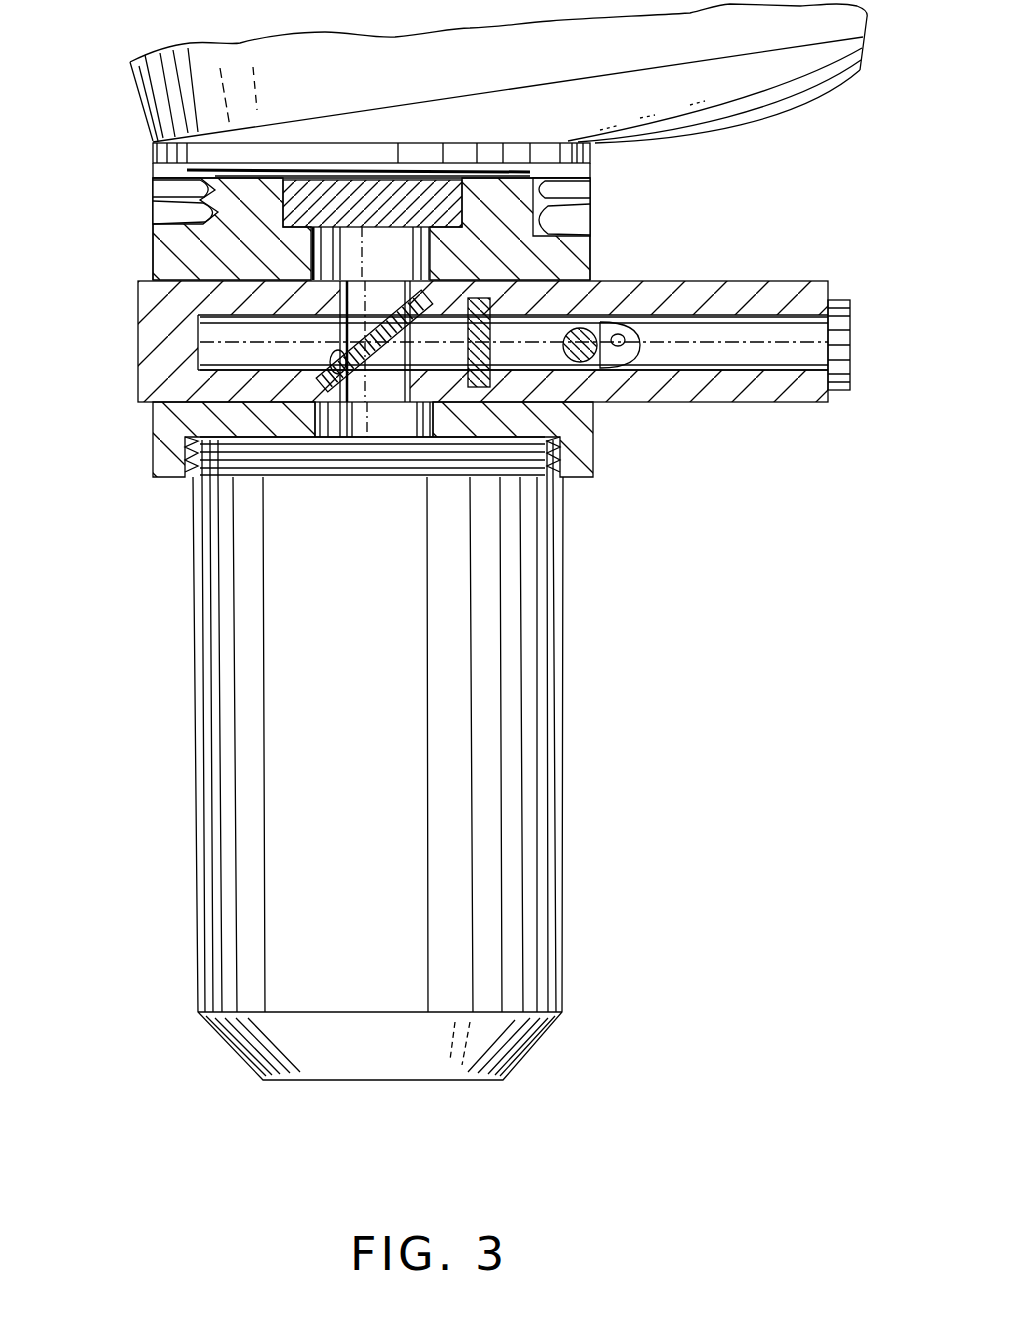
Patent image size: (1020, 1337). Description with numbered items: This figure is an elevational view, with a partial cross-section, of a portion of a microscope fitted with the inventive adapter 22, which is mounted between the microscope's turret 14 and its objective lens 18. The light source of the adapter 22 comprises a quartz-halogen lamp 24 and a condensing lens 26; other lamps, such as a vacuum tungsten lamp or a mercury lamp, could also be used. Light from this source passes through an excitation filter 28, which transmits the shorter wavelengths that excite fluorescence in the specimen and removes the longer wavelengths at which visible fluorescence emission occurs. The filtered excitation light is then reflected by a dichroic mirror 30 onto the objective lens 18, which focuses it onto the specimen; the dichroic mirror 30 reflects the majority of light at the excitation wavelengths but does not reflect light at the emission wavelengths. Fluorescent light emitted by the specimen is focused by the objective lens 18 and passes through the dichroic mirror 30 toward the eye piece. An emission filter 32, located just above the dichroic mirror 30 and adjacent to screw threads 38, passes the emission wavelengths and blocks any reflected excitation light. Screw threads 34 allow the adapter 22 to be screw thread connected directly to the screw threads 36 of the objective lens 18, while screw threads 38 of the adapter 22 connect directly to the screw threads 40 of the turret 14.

The turret 14 is at (843, 70).
The objective lens 18 is at (543, 713).
The adapter 22 is at (178, 256).
The quartz-halogen lamp 24 is at (778, 330).
The condensing lens 26 is at (600, 392).
The excitation filter 28 is at (497, 302).
The dichroic mirror 30 is at (337, 387).
The emission filter 32 is at (590, 167).
The screw threads 34 is at (175, 472).
The screw threads 36 is at (275, 472).
The screw threads 38 is at (200, 217).
The screw threads 40 is at (198, 193).